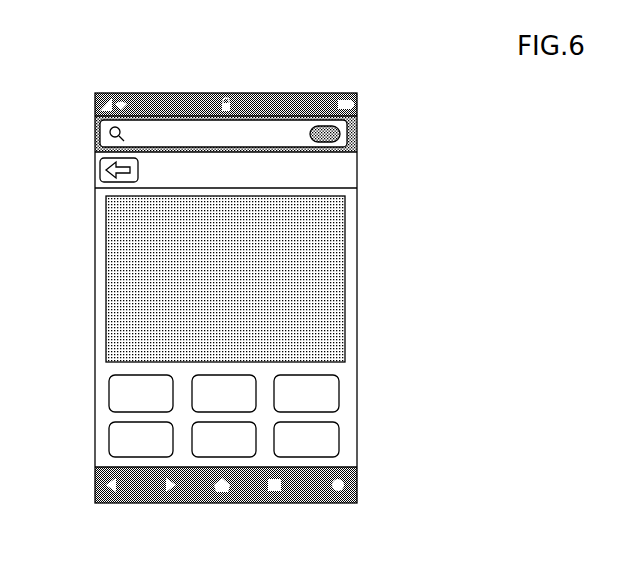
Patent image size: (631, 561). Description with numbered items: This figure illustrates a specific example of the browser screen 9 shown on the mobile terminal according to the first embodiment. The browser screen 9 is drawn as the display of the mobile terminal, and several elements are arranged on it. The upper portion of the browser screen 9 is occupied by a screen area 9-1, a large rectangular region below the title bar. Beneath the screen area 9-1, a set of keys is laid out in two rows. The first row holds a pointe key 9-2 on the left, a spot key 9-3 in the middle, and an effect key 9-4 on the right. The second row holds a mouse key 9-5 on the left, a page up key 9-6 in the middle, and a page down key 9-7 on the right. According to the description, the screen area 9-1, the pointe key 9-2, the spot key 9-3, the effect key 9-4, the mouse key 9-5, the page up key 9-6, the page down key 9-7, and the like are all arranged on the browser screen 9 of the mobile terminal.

The browser screen 9 is at (357, 224).
The screen area 9-1 is at (345, 208).
The pointe key 9-2 is at (108, 392).
The spot key 9-3 is at (257, 377).
The effect key 9-4 is at (339, 388).
The mouse key 9-5 is at (108, 440).
The page up key 9-6 is at (257, 457).
The page down key 9-7 is at (339, 437).